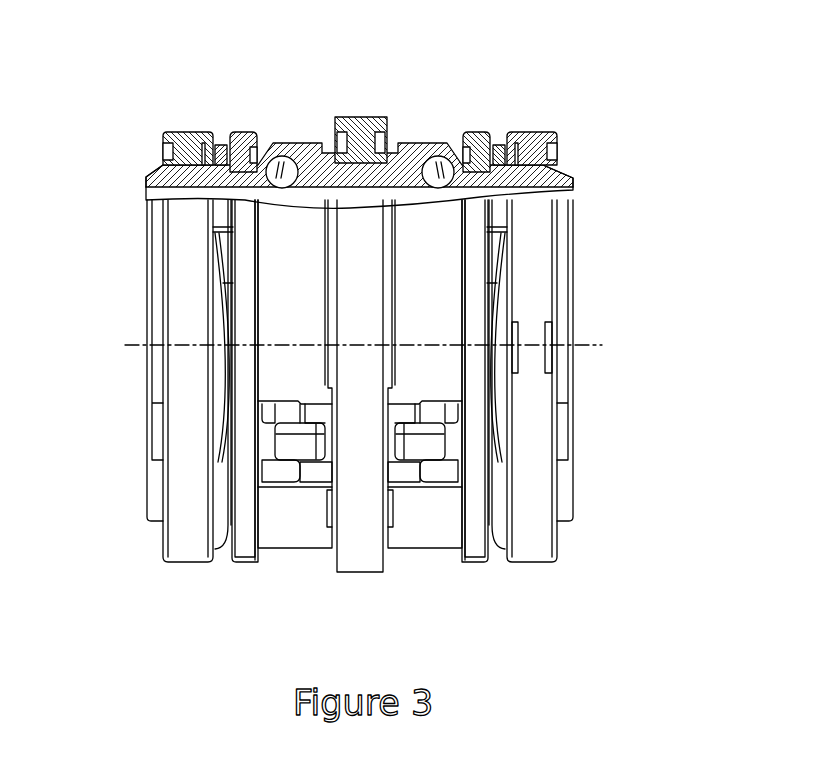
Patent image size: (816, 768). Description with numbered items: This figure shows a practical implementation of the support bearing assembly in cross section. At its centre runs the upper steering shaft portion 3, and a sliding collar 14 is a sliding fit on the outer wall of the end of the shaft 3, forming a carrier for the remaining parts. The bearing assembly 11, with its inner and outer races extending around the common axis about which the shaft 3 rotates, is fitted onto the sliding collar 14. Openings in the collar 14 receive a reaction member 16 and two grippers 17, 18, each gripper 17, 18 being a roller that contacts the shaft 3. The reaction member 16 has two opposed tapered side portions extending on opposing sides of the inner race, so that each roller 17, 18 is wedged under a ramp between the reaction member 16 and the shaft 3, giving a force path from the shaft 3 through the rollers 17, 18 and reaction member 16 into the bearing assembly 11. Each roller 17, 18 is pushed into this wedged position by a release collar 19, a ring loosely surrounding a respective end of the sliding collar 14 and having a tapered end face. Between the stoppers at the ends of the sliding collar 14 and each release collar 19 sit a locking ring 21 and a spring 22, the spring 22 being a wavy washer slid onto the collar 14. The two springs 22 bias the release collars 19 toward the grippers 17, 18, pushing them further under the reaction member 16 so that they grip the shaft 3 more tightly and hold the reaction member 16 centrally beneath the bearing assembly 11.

The upper steering shaft portion 3 is at (574, 191).
The bearing assembly 11 is at (362, 122).
The sliding collar 14 is at (155, 170).
The reaction member 16 is at (412, 143).
The gripper 17 is at (286, 163).
The gripper 18 is at (442, 163).
The release collar 19 is at (254, 136).
The locking ring 21 is at (181, 132).
The spring 22 is at (224, 145).